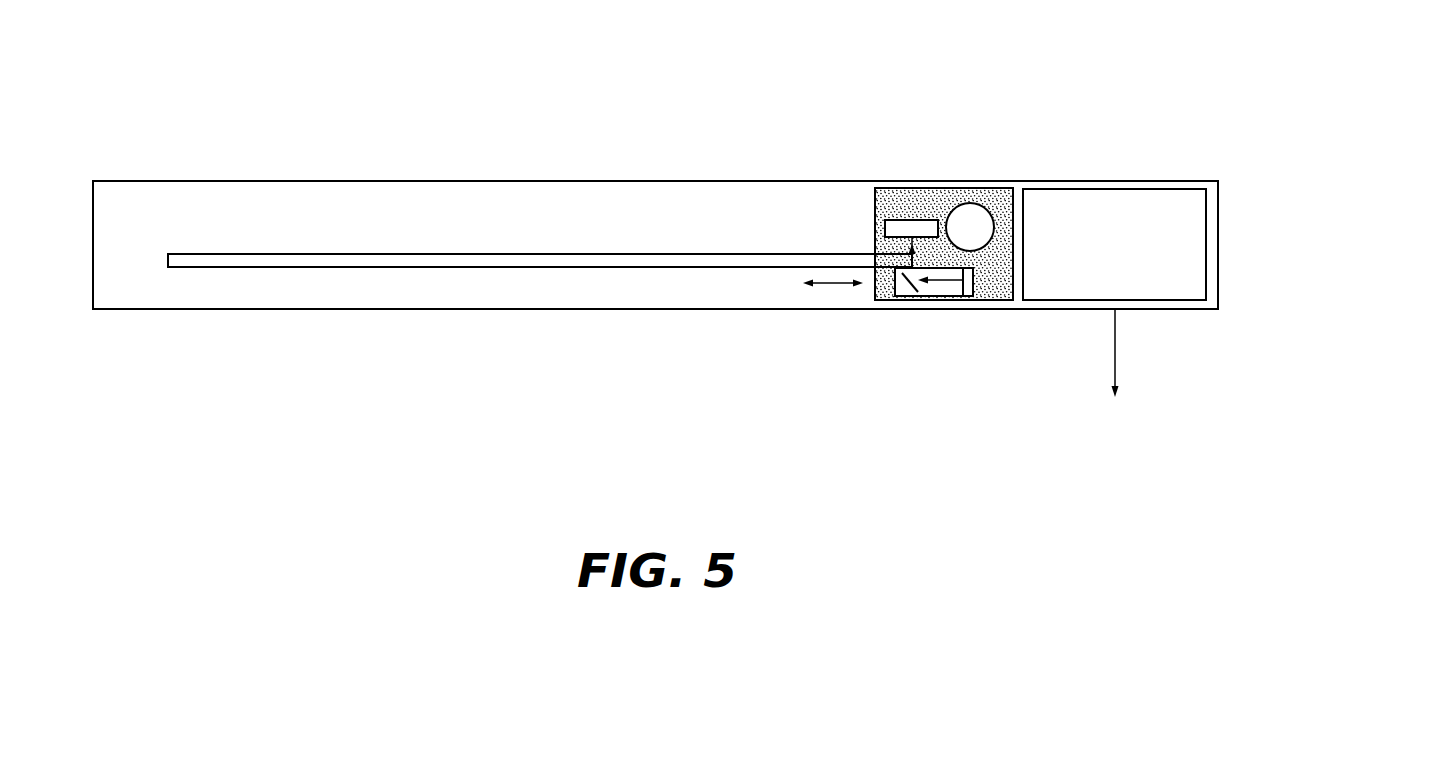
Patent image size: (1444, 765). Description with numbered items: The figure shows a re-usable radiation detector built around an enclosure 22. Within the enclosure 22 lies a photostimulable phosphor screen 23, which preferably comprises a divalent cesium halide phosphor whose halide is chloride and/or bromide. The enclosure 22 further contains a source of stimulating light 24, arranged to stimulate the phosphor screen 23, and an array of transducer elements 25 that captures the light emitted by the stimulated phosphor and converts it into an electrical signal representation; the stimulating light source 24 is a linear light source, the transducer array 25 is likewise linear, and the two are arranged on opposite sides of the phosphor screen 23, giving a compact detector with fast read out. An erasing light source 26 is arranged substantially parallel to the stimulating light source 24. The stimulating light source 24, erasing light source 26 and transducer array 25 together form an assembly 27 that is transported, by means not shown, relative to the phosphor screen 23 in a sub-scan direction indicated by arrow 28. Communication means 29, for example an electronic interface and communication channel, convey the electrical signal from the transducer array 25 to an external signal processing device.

The enclosure 22 is at (129, 189).
The photostimulable phosphor screen 23 is at (328, 258).
The source of stimulating light 24 is at (968, 282).
The array of transducer elements 25 is at (900, 222).
The erasing light source 26 is at (972, 210).
The assembly 27 is at (990, 292).
The arrow 28 is at (837, 283).
The communication means 29 is at (1115, 345).